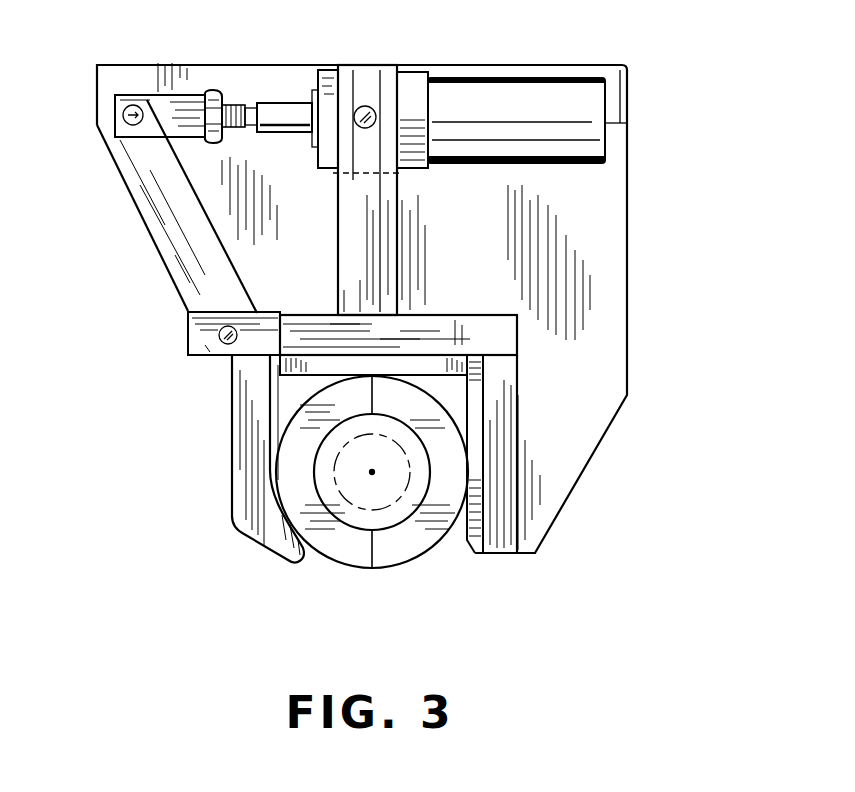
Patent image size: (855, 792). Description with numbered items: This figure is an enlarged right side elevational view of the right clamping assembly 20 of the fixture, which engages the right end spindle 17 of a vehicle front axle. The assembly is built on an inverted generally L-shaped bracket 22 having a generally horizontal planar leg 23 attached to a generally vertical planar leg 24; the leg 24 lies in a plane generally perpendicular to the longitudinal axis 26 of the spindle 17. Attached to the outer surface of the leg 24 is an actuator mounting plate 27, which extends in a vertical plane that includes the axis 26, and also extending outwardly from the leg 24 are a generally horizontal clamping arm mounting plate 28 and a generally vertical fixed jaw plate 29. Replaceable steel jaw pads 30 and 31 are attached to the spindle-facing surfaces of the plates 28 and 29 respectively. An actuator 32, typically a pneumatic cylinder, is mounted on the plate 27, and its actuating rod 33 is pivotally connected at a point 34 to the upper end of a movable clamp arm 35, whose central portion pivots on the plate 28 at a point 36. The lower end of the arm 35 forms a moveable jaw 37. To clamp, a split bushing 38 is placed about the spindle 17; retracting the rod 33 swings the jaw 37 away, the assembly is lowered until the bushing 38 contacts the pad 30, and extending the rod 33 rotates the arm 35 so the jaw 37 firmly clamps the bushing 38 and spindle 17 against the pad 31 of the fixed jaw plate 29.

The right end spindle 17 is at (360, 530).
The right clamping assembly 20 is at (407, 326).
The inverted generally L-shaped bracket 22 is at (406, 288).
The horizontally extending planar leg 23 is at (618, 85).
The vertically extending planar leg 24 is at (617, 363).
The longitudinal axis 26 is at (334, 506).
The actuator mounting plate 27 is at (388, 228).
The clamping arm mounting plate 28 is at (490, 330).
The fixed jaw plate 29 is at (505, 398).
The replaceable jaw pad 30 is at (312, 358).
The replaceable jaw pad 31 is at (470, 522).
The actuator 32 is at (540, 97).
The actuating rod 33 is at (275, 112).
The pivot point 34 is at (128, 115).
The movable clamp arm 35 is at (158, 200).
The pivot point 36 is at (218, 334).
The moveable jaw 37 is at (243, 428).
The split bushing 38 is at (335, 550).